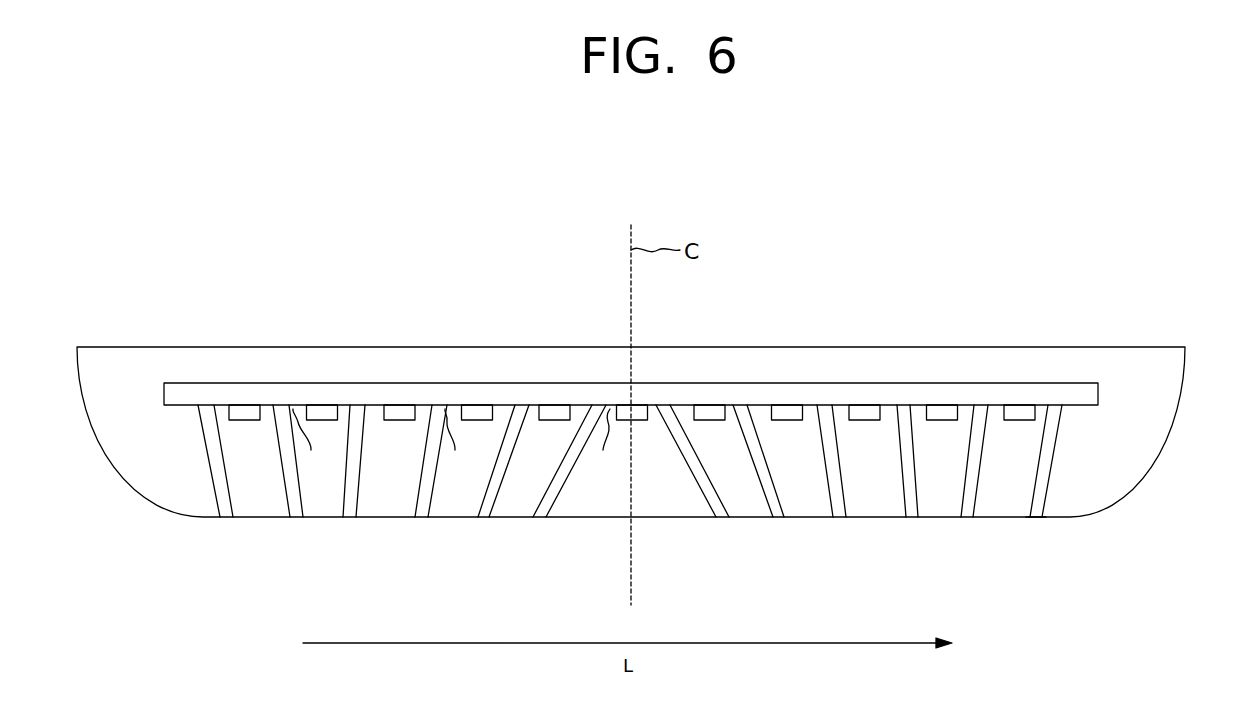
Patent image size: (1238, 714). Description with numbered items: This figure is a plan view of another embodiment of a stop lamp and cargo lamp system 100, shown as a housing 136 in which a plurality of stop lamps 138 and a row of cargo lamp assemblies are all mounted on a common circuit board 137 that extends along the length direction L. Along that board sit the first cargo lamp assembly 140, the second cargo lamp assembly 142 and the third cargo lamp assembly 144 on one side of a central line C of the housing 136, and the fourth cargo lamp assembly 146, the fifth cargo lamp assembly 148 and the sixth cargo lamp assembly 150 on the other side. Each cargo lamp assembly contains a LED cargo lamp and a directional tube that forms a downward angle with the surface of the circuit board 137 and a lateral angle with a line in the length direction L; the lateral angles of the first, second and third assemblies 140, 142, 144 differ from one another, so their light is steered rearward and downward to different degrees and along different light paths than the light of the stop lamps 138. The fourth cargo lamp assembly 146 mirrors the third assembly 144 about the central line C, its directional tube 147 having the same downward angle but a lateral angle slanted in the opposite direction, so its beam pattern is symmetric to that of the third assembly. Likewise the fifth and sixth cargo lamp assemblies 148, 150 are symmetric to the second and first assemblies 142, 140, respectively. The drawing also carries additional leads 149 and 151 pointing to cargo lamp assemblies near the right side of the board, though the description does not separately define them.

The stop lamp and cargo lamp system 100 is at (1016, 228).
The housing 136 is at (1130, 466).
The circuit board 137 is at (1043, 393).
The stop lamp 138 is at (322, 412).
The first cargo lamp assembly 140 is at (215, 491).
The second cargo lamp assembly 142 is at (344, 491).
The third cargo lamp assembly 144 is at (482, 492).
The fourth cargo lamp assembly 146 is at (704, 493).
The directional tube 147 is at (767, 491).
The fifth cargo lamp assembly 148 is at (831, 492).
The seventh support leg 149 is at (907, 492).
The sixth cargo lamp assembly 150 is at (1049, 493).
The fixing portion 151 is at (1036, 485).